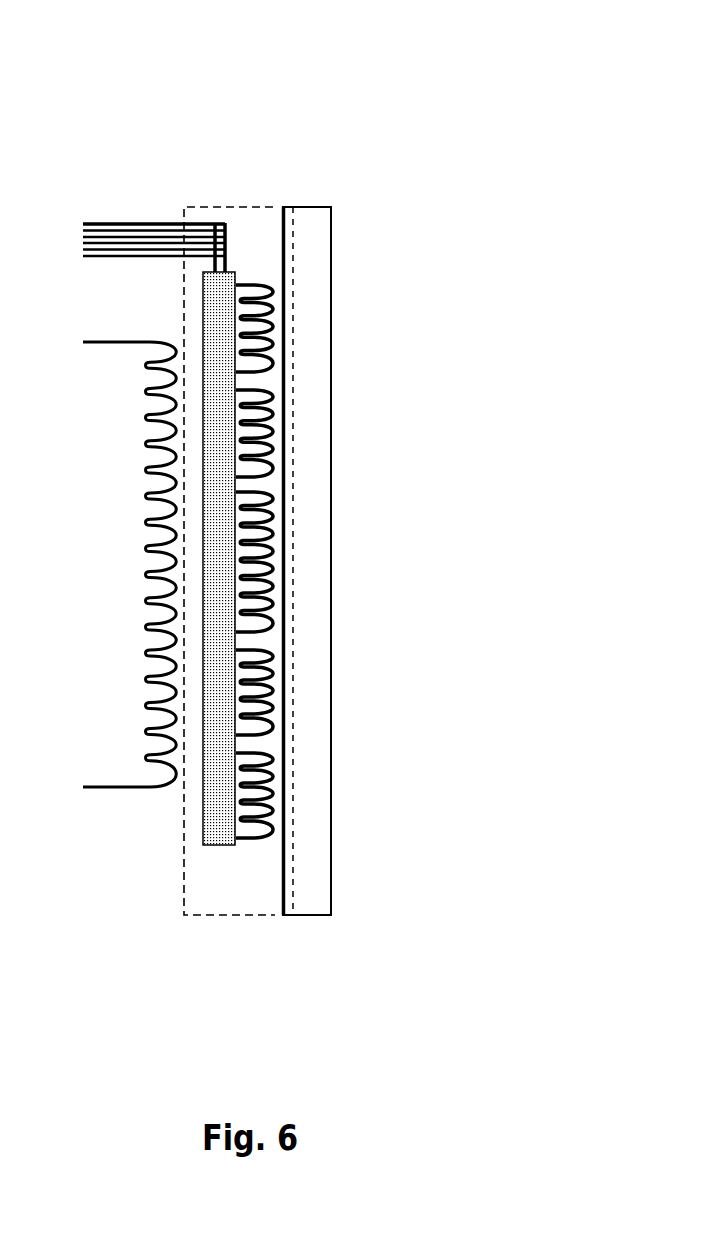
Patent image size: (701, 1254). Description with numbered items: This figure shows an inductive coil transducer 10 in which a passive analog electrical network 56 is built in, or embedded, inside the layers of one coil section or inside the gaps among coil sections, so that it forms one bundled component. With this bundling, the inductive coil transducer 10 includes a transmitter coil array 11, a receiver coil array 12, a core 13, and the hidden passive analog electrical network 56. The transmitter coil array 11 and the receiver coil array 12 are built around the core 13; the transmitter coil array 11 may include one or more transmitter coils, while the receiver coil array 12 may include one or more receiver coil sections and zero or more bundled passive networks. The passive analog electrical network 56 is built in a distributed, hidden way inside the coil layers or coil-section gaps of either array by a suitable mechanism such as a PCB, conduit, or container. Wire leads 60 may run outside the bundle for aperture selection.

The inductive coil transducer 10 is at (308, 76).
The transmitter coil array 11 is at (118, 787).
The receiver coil array 12 is at (255, 870).
The core 13 is at (332, 230).
The passive analog electrical network 56 is at (203, 845).
The wire leads 60 is at (130, 222).